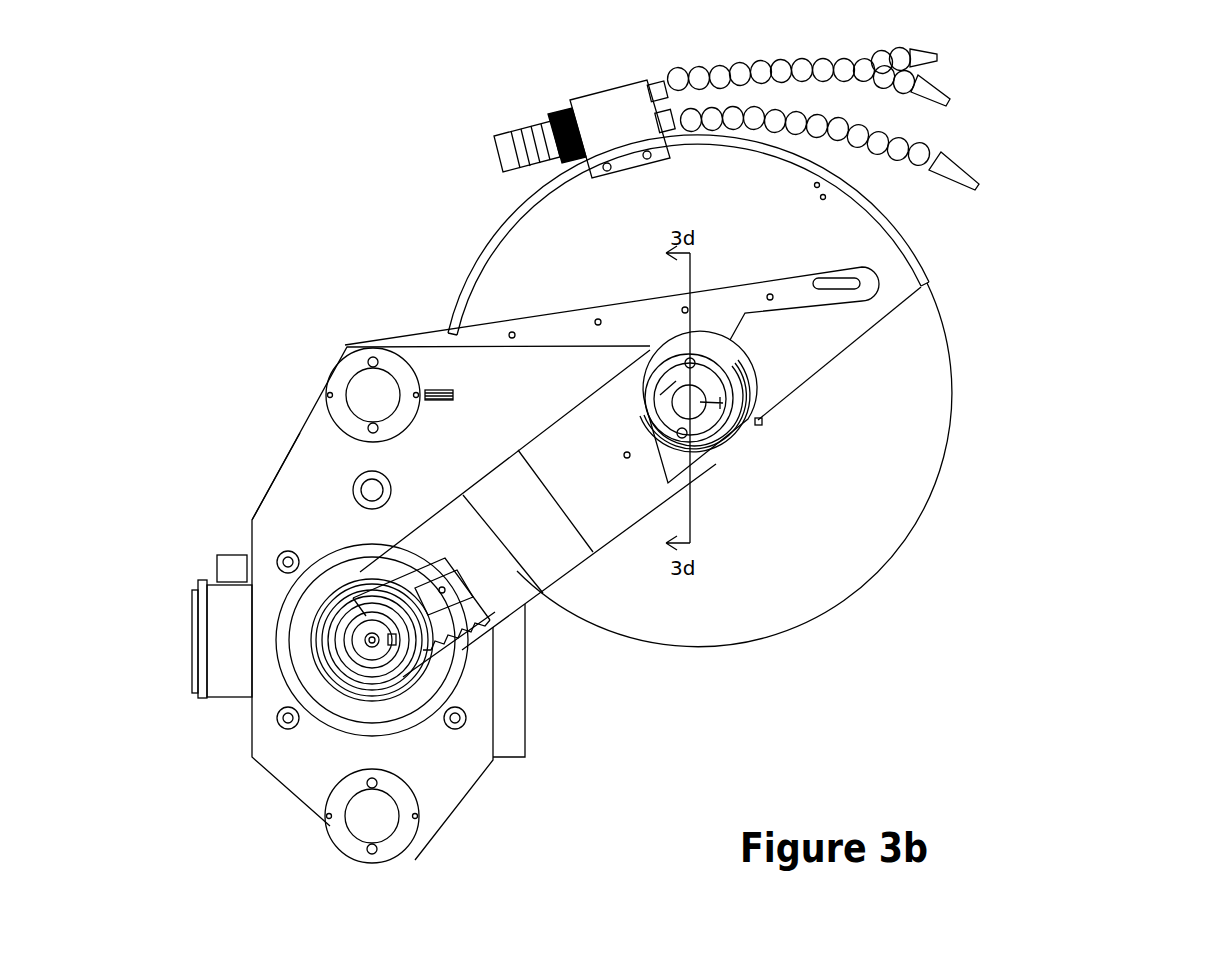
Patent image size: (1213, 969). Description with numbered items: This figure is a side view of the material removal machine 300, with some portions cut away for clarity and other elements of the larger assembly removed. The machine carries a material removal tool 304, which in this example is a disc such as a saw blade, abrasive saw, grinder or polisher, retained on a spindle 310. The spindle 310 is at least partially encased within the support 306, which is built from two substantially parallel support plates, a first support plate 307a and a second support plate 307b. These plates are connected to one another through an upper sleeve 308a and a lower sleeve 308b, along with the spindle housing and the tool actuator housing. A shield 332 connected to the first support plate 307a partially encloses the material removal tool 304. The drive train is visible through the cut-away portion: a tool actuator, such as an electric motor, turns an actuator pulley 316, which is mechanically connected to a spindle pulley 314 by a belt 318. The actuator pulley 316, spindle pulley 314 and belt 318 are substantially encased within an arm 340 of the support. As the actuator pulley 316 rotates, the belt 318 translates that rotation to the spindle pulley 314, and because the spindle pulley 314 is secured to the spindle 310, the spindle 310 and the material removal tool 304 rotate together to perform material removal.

The material removal machine 300 is at (1104, 201).
The material removal tool 304 is at (912, 438).
The support 306 is at (252, 461).
The first support plate 307a is at (813, 282).
The second support plate 307b is at (323, 437).
The upper sleeve 308a is at (347, 372).
The lower sleeve 308b is at (343, 827).
The spindle 310 is at (723, 403).
The spindle pulley 314 is at (676, 381).
The actuator pulley 316 is at (360, 640).
The belt 318 is at (490, 630).
The shield 332 is at (500, 250).
The arm 340 is at (582, 497).